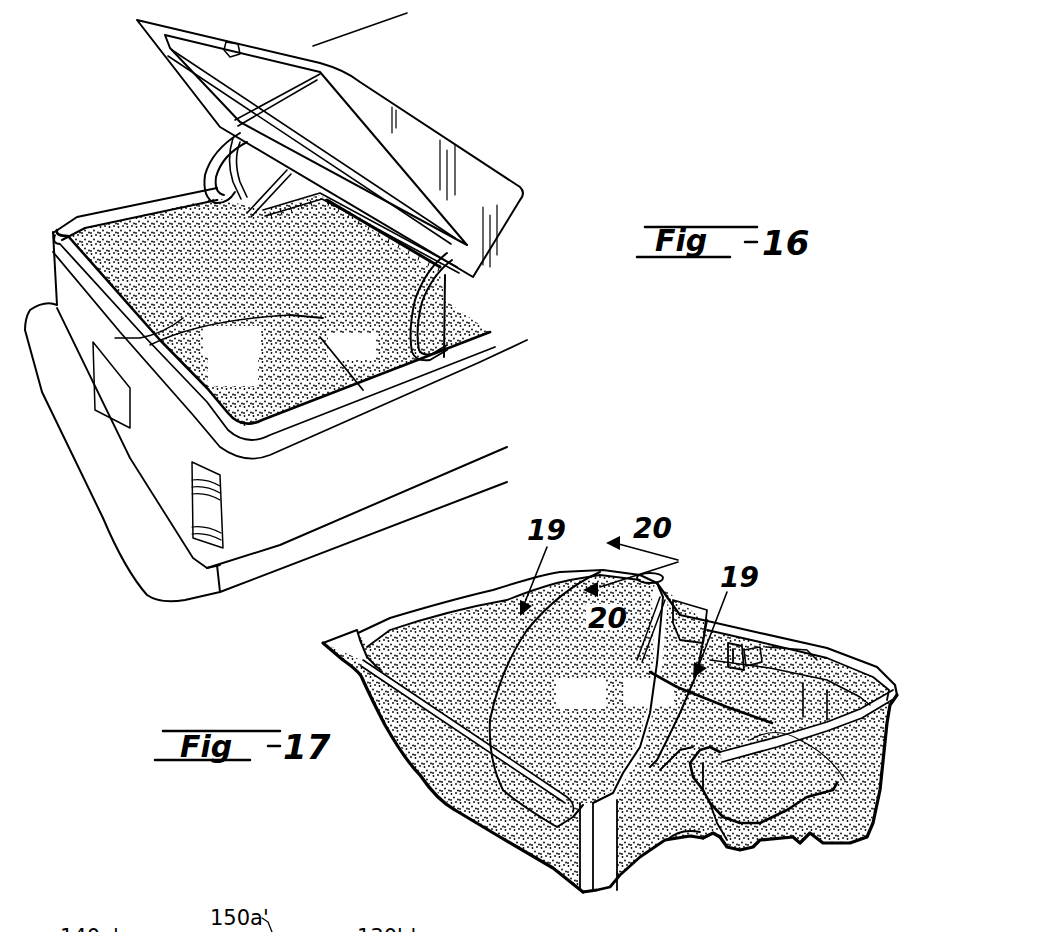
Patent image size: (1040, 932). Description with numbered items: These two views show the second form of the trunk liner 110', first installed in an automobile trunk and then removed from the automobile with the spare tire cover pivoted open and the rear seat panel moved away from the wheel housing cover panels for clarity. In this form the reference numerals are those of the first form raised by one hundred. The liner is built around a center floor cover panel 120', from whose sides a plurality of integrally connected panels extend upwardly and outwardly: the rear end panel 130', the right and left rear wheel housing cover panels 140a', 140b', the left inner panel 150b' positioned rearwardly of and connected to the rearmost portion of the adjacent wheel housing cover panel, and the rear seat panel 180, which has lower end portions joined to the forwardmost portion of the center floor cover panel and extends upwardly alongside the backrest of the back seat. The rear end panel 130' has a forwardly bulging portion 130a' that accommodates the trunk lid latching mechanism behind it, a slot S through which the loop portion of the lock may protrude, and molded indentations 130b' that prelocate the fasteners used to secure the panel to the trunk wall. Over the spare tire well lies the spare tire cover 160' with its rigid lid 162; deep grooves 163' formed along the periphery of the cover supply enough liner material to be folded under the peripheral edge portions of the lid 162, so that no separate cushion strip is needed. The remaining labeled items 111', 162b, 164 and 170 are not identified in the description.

In FIG. 16, the trunk liner 110' is at (266, 416).
In FIG. 17, the trunk liner 110' is at (798, 625).
In FIG. 17, the trunk floor edge 111' is at (800, 785).
In FIG. 16, the center floor cover panel 120' is at (349, 362).
In FIG. 17, the rear end panel 130' is at (775, 653).
In FIG. 17, the forwardly bulging portion 130a' is at (788, 638).
In FIG. 17, the indentations 130b' is at (825, 683).
In FIG. 17, the right rear wheel housing cover panel 140a' is at (490, 620).
In FIG. 16, the left rear wheel housing cover panel 140b' is at (215, 175).
In FIG. 17, the left rear wheel housing cover panel 140b' is at (626, 862).
In FIG. 16, the left inner panel 150b' is at (133, 255).
In FIG. 17, the left inner panel 150b' is at (738, 685).
In FIG. 16, the spare tire cover 160' is at (220, 350).
In FIG. 17, the spare tire cover 160' is at (548, 699).
In FIG. 17, the rigid lid 162 is at (656, 618).
In FIG. 17, the hinge portion 162b is at (653, 662).
In FIG. 16, the grooves 163' is at (264, 336).
In FIG. 17, the hinge pin 164 is at (650, 573).
In FIG. 17, the divider 170 is at (670, 840).
In FIG. 16, the rear seat panel 180 is at (438, 298).
In FIG. 17, the rear seat panel 180 is at (447, 793).
In FIG. 17, the slot S is at (733, 643).